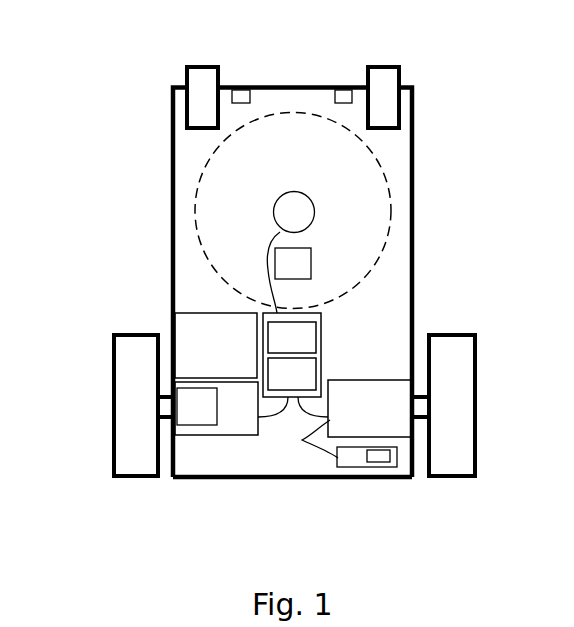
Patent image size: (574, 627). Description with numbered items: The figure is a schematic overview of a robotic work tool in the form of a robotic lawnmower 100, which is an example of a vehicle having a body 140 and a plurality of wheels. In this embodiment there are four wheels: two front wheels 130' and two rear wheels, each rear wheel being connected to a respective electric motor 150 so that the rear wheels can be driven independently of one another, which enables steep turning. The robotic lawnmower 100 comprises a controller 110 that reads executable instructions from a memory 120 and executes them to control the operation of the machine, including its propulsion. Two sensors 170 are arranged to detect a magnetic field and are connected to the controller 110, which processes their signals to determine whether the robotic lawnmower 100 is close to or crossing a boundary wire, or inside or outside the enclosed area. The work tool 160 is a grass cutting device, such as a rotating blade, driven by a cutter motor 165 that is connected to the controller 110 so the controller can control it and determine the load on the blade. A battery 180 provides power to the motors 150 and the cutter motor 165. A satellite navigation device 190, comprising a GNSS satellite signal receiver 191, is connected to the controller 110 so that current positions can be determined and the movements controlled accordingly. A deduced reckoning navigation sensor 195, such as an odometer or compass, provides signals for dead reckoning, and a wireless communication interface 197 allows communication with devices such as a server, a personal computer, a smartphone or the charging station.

The robotic lawnmower 100 is at (170, 128).
The controller 110 is at (321, 335).
The memory 120 is at (321, 372).
The front wheels 130' is at (351, 123).
The body 140 is at (193, 478).
The electric motor 150 is at (248, 417).
The work tool 160 is at (205, 245).
The cutter motor 165 is at (276, 220).
The sensor 170 is at (325, 87).
The battery 180 is at (190, 335).
The satellite navigation device 190 is at (292, 397).
The satellite signal receiver 191 is at (375, 458).
The deduced reckoning navigation sensor 195 is at (195, 427).
The wireless communication interface 197 is at (311, 265).